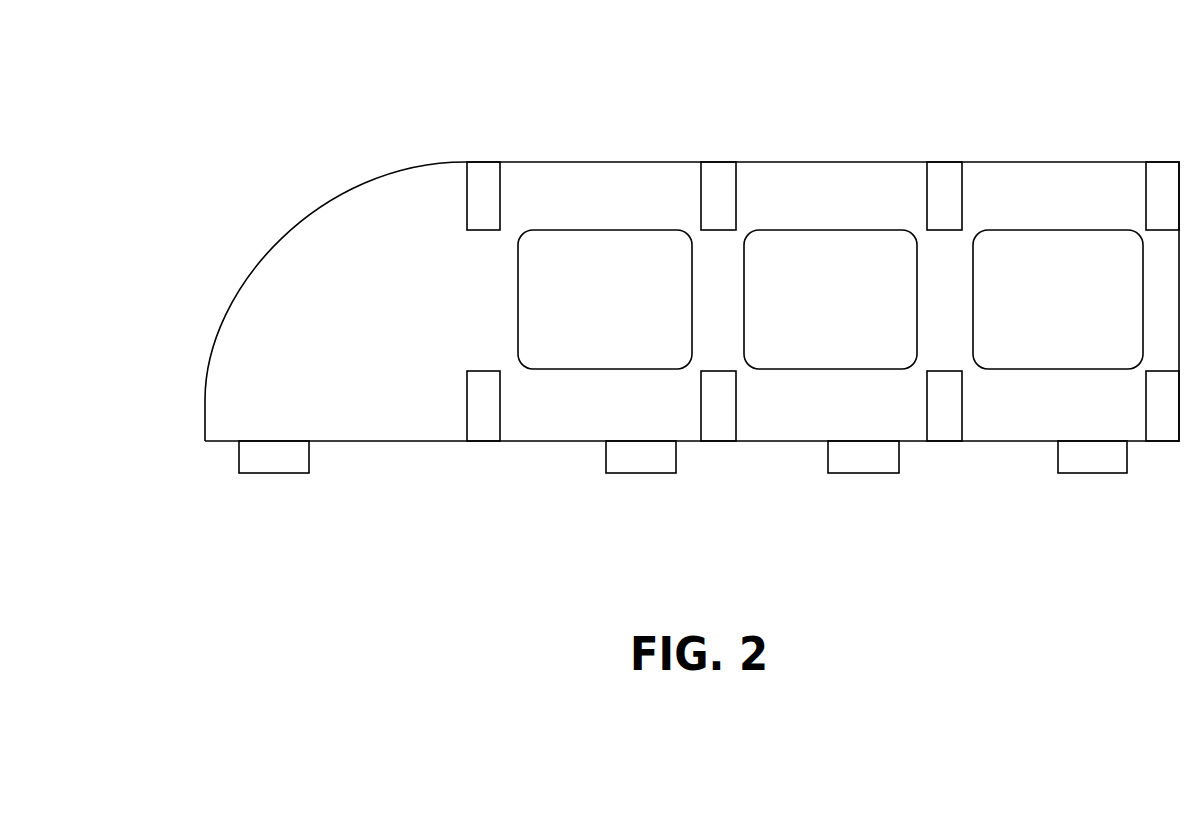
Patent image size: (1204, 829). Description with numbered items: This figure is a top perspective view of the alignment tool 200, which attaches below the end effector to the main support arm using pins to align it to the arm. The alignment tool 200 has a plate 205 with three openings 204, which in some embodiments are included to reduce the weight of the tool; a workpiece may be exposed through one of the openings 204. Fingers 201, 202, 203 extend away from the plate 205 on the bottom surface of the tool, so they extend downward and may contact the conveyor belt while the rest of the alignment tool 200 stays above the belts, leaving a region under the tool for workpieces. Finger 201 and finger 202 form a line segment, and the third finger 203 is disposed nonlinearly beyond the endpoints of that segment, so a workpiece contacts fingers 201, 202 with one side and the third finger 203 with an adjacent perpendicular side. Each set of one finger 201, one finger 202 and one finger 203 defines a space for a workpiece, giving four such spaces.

The alignment tool 200 is at (279, 152).
The finger 201 is at (486, 182).
The finger 202 is at (485, 423).
The third finger 203 is at (279, 447).
The opening 204 is at (625, 248).
The plate 205 is at (259, 328).